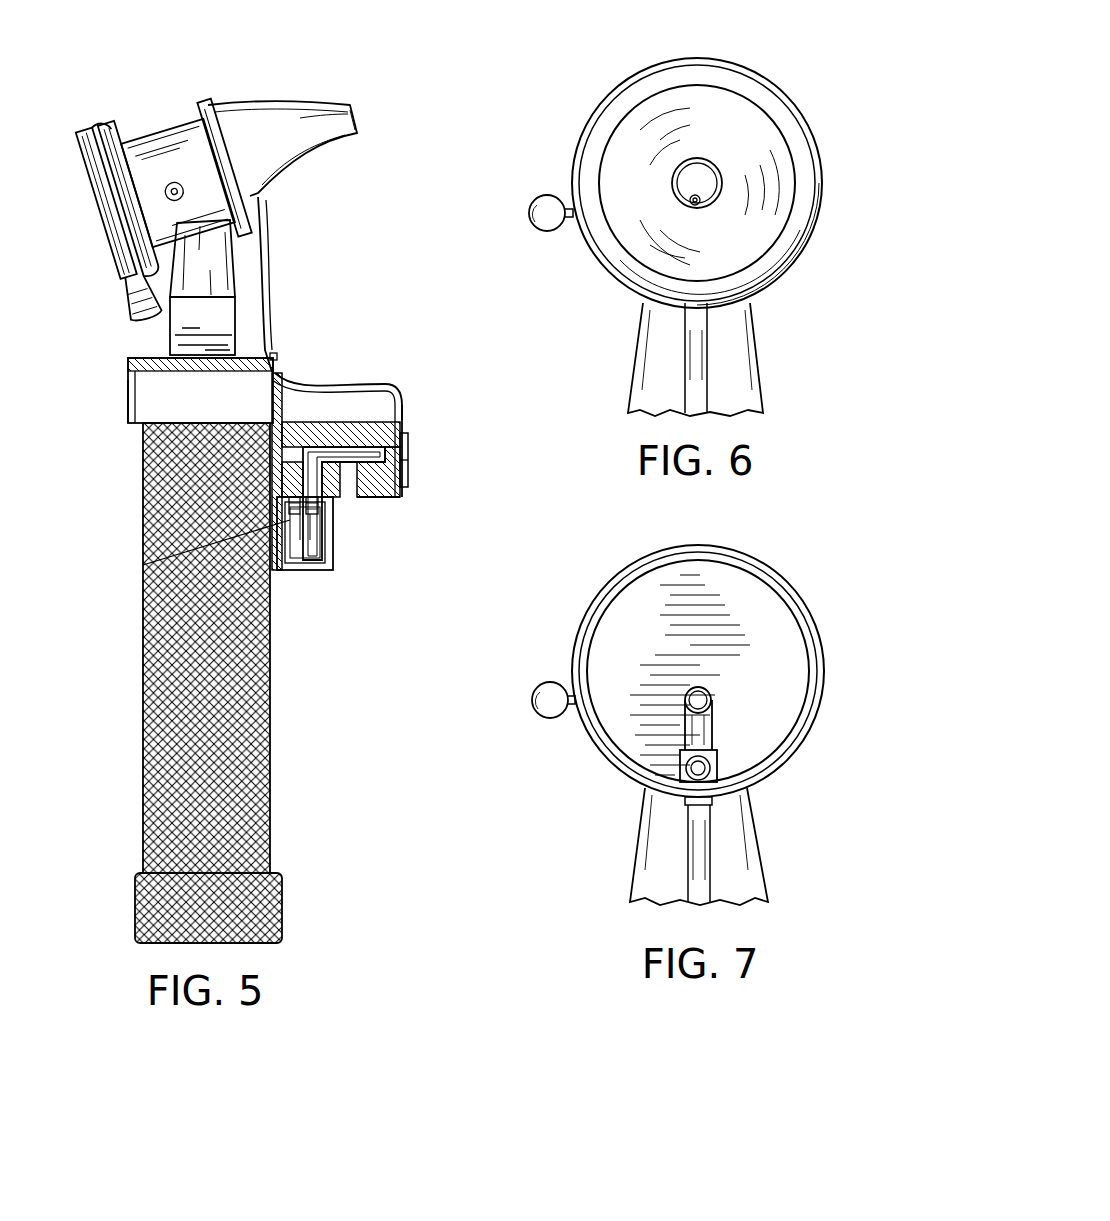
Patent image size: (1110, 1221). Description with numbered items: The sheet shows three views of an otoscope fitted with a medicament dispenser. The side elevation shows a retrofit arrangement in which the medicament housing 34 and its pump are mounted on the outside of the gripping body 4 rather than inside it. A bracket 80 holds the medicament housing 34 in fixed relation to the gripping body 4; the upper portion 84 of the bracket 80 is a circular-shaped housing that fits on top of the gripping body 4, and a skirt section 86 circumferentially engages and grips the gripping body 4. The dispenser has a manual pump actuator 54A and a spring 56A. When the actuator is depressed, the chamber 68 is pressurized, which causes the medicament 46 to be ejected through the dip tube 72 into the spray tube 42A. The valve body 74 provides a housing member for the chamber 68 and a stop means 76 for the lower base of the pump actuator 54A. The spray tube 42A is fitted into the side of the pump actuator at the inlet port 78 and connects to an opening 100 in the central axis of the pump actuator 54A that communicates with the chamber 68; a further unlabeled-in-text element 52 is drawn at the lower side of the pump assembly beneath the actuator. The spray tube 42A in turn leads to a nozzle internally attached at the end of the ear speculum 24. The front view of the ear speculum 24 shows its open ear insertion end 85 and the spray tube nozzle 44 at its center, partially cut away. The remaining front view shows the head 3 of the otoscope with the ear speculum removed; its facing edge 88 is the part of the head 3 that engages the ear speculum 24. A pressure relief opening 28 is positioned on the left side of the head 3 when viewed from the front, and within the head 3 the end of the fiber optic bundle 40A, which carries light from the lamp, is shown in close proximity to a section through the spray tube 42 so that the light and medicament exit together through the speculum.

In FIG. 6, the head 3 is at (750, 330).
In FIG. 5, the gripping body 4 is at (143, 712).
In FIG. 5, the ear speculum 24 is at (268, 120).
In FIG. 6, the ear speculum 24 is at (760, 138).
In FIG. 6, the pressure relief opening 28 is at (548, 198).
In FIG. 7, the pressure relief opening 28 is at (548, 688).
In FIG. 5, the medicament housing 34 is at (305, 518).
In FIG. 7, the end of the fiber optic bundle 40A is at (705, 698).
In FIG. 7, the spray tube 42 is at (703, 762).
In FIG. 5, the spray tube 42A is at (345, 440).
In FIG. 6, the spray nozzle 44 is at (695, 205).
In FIG. 5, the medicament 46 is at (297, 558).
In FIG. 5, the lamp housing 52 is at (392, 498).
In FIG. 5, the manual pump actuator 54A is at (410, 470).
In FIG. 5, the spring 56A is at (403, 412).
In FIG. 5, the chamber 68 is at (322, 435).
In FIG. 5, the dip tube 72 is at (305, 542).
In FIG. 5, the valve body 74 is at (300, 427).
In FIG. 5, the stop means 76 is at (360, 425).
In FIG. 5, the inlet port 78 is at (405, 415).
In FIG. 5, the bracket 80 is at (333, 568).
In FIG. 5, the upper portion of bracket 84 is at (150, 362).
In FIG. 6, the open ear insertion end 85 is at (697, 185).
In FIG. 5, the skirt section 86 is at (125, 410).
In FIG. 7, the facing edge 88 is at (752, 567).
In FIG. 5, the opening 100 is at (410, 468).